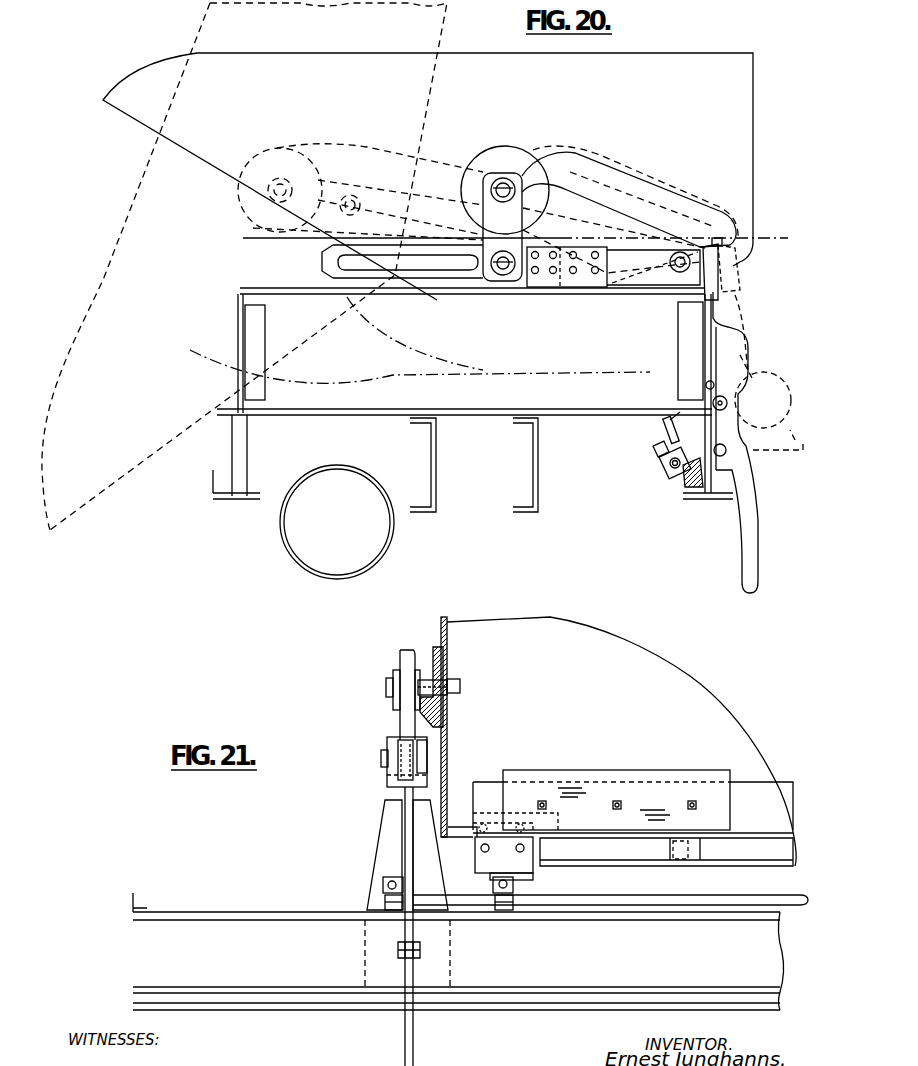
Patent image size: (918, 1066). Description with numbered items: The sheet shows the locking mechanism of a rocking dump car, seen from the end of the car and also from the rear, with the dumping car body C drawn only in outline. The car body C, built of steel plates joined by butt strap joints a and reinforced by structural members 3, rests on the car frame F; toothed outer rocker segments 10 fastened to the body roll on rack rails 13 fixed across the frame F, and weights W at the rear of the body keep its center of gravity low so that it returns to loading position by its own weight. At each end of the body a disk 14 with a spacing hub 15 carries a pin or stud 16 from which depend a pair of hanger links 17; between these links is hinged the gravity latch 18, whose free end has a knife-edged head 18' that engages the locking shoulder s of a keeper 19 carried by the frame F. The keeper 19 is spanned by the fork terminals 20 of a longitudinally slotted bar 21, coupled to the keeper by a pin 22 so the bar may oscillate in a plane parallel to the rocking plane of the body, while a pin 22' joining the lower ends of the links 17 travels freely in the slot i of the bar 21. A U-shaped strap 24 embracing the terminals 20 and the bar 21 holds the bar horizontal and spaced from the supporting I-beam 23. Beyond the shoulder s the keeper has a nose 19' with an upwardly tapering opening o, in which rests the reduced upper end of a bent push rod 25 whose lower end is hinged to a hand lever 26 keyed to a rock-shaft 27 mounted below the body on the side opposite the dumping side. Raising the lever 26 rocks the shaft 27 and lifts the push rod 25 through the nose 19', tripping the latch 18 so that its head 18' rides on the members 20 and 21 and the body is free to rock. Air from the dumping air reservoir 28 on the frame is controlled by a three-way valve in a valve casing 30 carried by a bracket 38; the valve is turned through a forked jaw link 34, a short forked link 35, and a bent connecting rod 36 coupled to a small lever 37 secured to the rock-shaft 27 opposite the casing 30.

In FIG. 21, the structural members 3 is at (773, 840).
In FIG. 21, the outer rocker segments 10 is at (483, 866).
In FIG. 21, the rack rails 13 is at (533, 873).
In FIG. 20, the disk 14 is at (473, 165).
In FIG. 21, the disk 14 is at (438, 647).
In FIG. 21, the spacing hub 15 is at (443, 710).
In FIG. 20, the pin or stud 16 is at (507, 186).
In FIG. 21, the pin or stud 16 is at (450, 688).
In FIG. 20, the hanger links 17 is at (308, 185).
In FIG. 21, the hanger links 17 is at (417, 670).
In FIG. 20, the gravity latch 18 is at (551, 229).
In FIG. 21, the gravity latch 18 is at (393, 677).
In FIG. 20, the knife-edged head 18' is at (733, 211).
In FIG. 21, the knife-edged head 18' is at (378, 709).
In FIG. 20, the keeper 19 is at (684, 292).
In FIG. 21, the keeper 19 is at (377, 770).
In FIG. 20, the nose 19' is at (760, 268).
In FIG. 21, the nose 19' is at (371, 743).
In FIG. 20, the fork terminals 20 is at (634, 272).
In FIG. 21, the fork terminals 20 is at (427, 747).
In FIG. 20, the slotted bar 21 is at (384, 196).
In FIG. 20, the pin 22 is at (665, 264).
In FIG. 21, the pin 22 is at (360, 763).
In FIG. 20, the pin 22' is at (492, 288).
In FIG. 20, the I-beam 23 is at (285, 300).
In FIG. 20, the U-shaped strap 24 is at (567, 288).
In FIG. 21, the U-shaped strap 24 is at (388, 740).
In FIG. 20, the push rod 25 is at (740, 298).
In FIG. 21, the push rod 25 is at (403, 800).
In FIG. 20, the hand lever 26 is at (780, 440).
In FIG. 21, the hand lever 26 is at (416, 1048).
In FIG. 20, the rock-shaft 27 is at (738, 405).
In FIG. 21, the rock-shaft 27 is at (724, 905).
In FIG. 20, the dumping air reservoir 28 is at (280, 532).
In FIG. 20, the valve casing 30 is at (667, 468).
In FIG. 20, the forked jaw link 34 is at (656, 452).
In FIG. 20, the short forked link 35 is at (684, 434).
In FIG. 20, the connecting rod 36 is at (670, 420).
In FIG. 20, the small lever 37 is at (716, 385).
In FIG. 20, the bracket or socket 38 is at (690, 483).
In FIG. 21, the butt strap joints a is at (383, 897).
In FIG. 20, the dumping car body C is at (755, 117).
In FIG. 20, the car frame F is at (232, 474).
In FIG. 21, the car frame F is at (300, 1000).
In FIG. 21, the weights W is at (628, 773).
In FIG. 20, the slot i is at (425, 251).
In FIG. 20, the opening o is at (735, 292).
In FIG. 20, the locking shoulder s is at (730, 243).